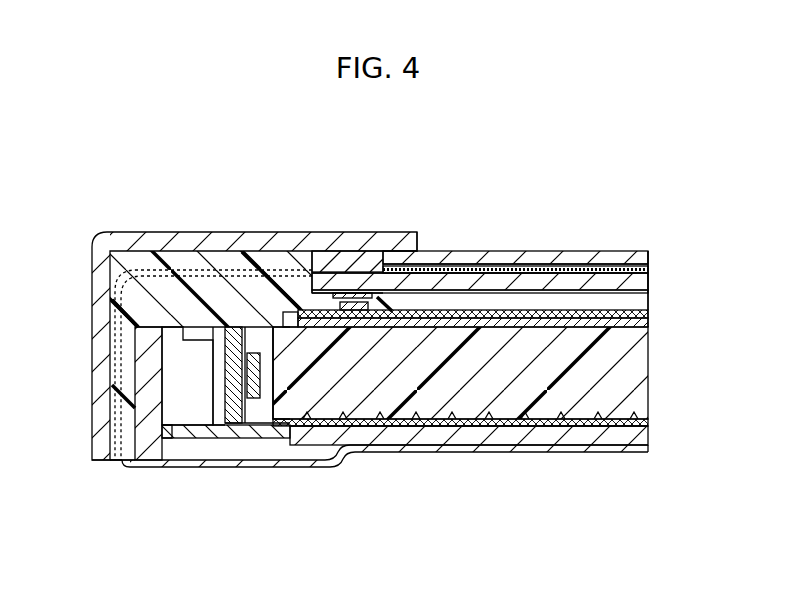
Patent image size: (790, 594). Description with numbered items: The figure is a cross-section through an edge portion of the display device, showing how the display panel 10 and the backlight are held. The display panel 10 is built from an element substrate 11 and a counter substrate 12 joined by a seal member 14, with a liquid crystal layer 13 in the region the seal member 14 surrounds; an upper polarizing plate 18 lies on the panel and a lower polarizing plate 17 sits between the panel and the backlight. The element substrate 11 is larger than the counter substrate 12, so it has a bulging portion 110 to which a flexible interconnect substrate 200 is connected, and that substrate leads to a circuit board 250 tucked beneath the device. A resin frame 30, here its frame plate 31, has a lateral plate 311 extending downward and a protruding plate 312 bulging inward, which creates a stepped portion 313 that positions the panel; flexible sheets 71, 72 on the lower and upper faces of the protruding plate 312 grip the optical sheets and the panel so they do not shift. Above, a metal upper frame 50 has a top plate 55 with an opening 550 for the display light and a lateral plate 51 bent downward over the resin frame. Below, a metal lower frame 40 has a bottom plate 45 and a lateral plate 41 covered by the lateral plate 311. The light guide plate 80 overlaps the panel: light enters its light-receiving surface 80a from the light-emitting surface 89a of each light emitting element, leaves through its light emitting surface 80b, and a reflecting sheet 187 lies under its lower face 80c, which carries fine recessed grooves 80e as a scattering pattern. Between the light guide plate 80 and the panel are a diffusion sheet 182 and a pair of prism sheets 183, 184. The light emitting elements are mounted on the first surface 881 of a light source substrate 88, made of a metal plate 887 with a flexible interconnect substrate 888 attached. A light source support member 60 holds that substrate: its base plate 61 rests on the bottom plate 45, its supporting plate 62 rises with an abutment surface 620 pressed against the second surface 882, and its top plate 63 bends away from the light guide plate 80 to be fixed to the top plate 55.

The display panel 10 is at (430, 195).
The element substrate 11 is at (457, 285).
The counter substrate 12 is at (520, 263).
The liquid crystal layer 13 is at (480, 276).
The seal member 14 is at (397, 272).
The lower polarizing plate 17 is at (588, 291).
The upper polarizing plate 18 is at (563, 251).
The resin frame 30 is at (125, 313).
The frame plate 31 is at (134, 305).
The lower frame 40 is at (373, 442).
The lateral plate 41 is at (152, 423).
The bottom plate 45 is at (400, 440).
The upper frame 50 is at (110, 224).
The lateral plate 51 is at (97, 273).
The top plate 55 is at (128, 238).
The light source support member 60 is at (182, 455).
The base plate 61 is at (165, 463).
The supporting plate 62 is at (233, 327).
The top plate 63 is at (213, 333).
The flexible sheet 71 is at (352, 296).
The flexible sheet 72 is at (366, 305).
The light guide plate 80 is at (517, 392).
The light-receiving surface 80a is at (262, 430).
The light emitting surface 80b is at (641, 253).
The lower face 80c is at (540, 428).
The fine recessed grooves 80e is at (583, 427).
The light source substrate 88 is at (250, 508).
The light-emitting surface 89a is at (258, 400).
The bulging portion 110 is at (367, 278).
The diffusion sheet 182 is at (649, 322).
The prism sheet 183 is at (649, 314).
The prism sheet 184 is at (649, 306).
The reflecting sheet 187 is at (643, 453).
The flexible interconnect substrate 200 is at (343, 272).
The circuit board 250 is at (450, 452).
The lateral plate 311 is at (114, 385).
The protruding plate 312 is at (393, 308).
The stepped portion 313 is at (291, 298).
The opening 550 is at (421, 250).
The abutment surface 620 is at (212, 372).
The first surface 881 is at (260, 330).
The second surface 882 is at (190, 340).
The metal plate 887 is at (237, 425).
The flexible interconnect substrate 888 is at (247, 423).